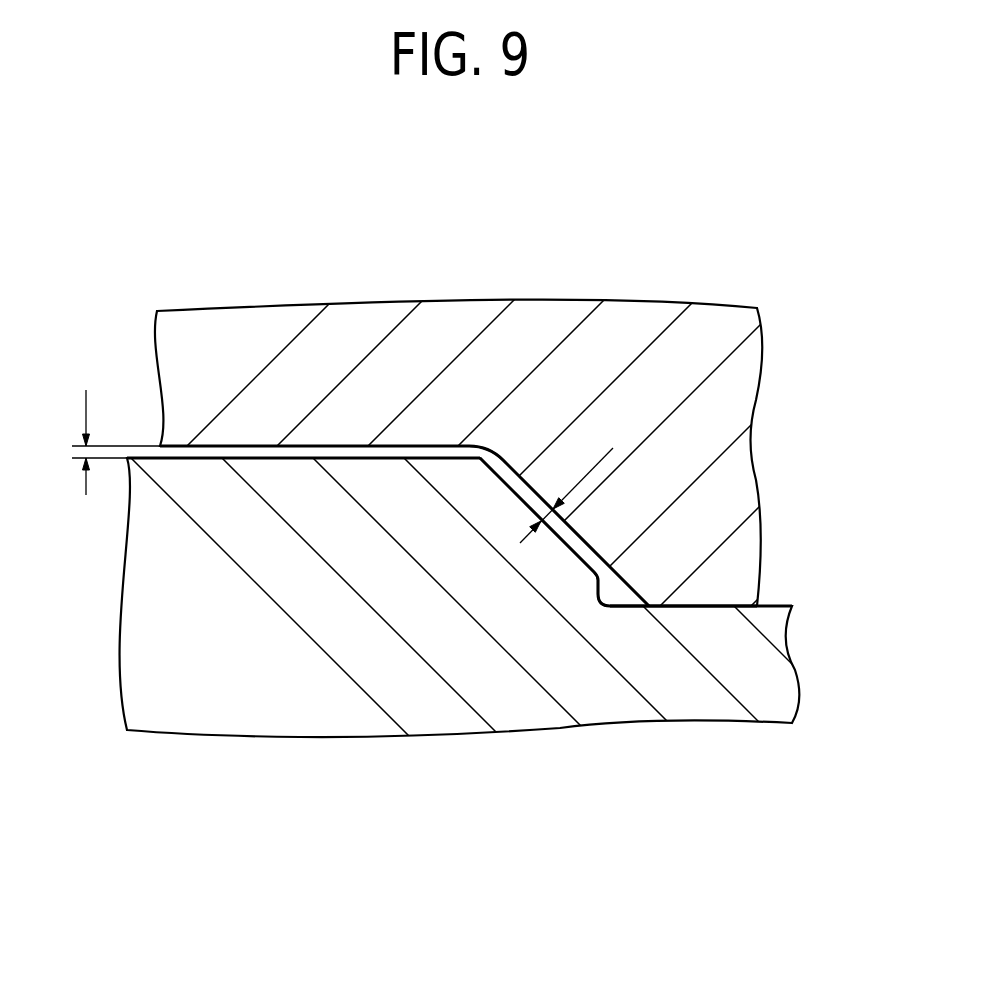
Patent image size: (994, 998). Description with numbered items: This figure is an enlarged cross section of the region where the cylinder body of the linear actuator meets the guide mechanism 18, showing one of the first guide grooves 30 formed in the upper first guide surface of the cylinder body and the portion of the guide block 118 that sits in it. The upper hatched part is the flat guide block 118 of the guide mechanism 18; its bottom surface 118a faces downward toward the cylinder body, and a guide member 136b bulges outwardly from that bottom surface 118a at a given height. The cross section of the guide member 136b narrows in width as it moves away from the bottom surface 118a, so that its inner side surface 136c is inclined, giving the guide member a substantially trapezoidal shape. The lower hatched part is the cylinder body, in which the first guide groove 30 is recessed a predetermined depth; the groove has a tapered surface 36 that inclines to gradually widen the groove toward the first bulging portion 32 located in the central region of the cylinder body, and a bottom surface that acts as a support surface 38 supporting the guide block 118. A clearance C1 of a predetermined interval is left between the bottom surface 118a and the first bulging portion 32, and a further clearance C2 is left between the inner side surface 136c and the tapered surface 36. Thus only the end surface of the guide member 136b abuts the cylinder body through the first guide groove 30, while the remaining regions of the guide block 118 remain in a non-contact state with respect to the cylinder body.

The guide mechanism 18 is at (503, 518).
The guide block 118 is at (420, 317).
The bottom surface of the guide block 118a is at (348, 447).
The first bulging portion 32 is at (255, 470).
The tapered surface 36 is at (522, 495).
The first guide groove 30 is at (623, 593).
The support surface 38 is at (703, 603).
The inner side surface 136c is at (607, 557).
The guide member 136b is at (748, 538).
The clearance C1 is at (104, 442).
The clearance C2 is at (566, 486).